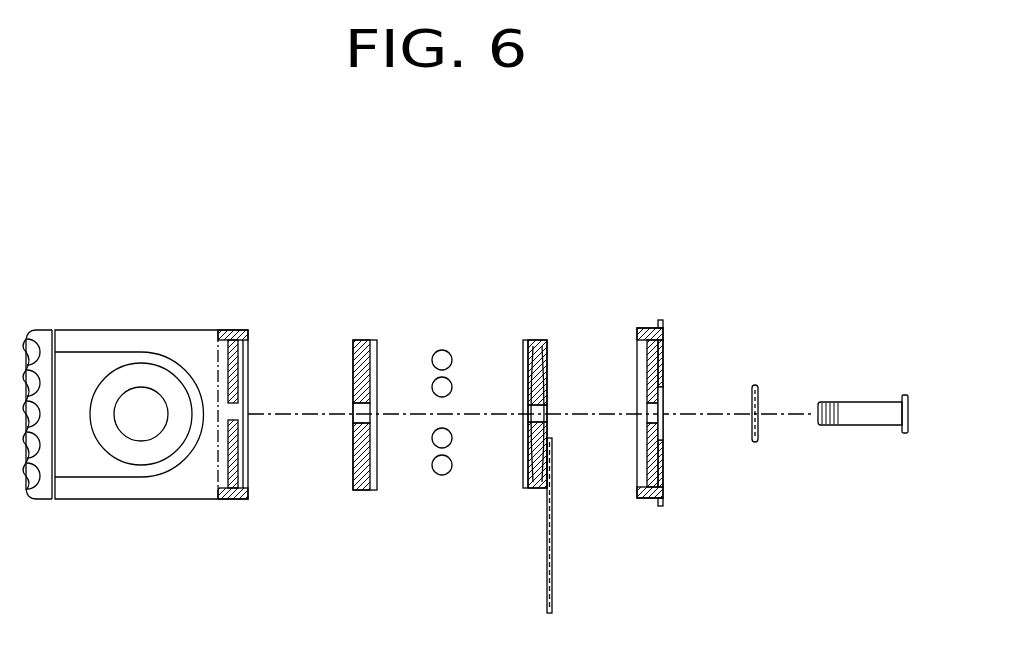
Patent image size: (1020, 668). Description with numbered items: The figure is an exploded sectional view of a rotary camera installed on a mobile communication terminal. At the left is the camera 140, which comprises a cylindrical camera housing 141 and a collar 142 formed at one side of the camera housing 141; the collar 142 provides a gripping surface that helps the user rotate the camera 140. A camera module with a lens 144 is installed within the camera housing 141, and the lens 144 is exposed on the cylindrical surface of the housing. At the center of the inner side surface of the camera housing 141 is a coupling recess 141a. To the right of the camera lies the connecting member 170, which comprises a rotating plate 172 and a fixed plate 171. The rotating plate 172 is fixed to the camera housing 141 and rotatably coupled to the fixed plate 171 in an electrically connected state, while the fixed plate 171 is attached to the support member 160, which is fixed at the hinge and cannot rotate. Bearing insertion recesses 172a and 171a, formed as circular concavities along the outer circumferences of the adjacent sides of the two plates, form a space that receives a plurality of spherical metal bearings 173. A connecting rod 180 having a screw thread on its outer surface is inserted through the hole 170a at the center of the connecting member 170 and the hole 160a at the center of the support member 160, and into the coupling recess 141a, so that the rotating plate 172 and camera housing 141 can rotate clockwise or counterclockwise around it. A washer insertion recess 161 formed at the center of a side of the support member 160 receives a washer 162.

The camera 140 is at (137, 418).
The camera housing 141 is at (149, 419).
The coupling recess 141a is at (236, 340).
The collar 142 is at (37, 493).
The lens 144 is at (141, 432).
The support member 160 is at (686, 454).
The hole 160a is at (665, 365).
The washer insertion recess 161 is at (665, 402).
The washer 162 is at (755, 443).
The connecting member 170 is at (447, 438).
The hole 170a is at (353, 413).
The fixed plate 171 is at (514, 452).
The bearing insertion recess 171a is at (535, 340).
The rotating plate 172 is at (377, 412).
The bearing insertion recess 172a is at (362, 340).
The bearing 173 is at (442, 350).
The connecting rod 180 is at (873, 417).